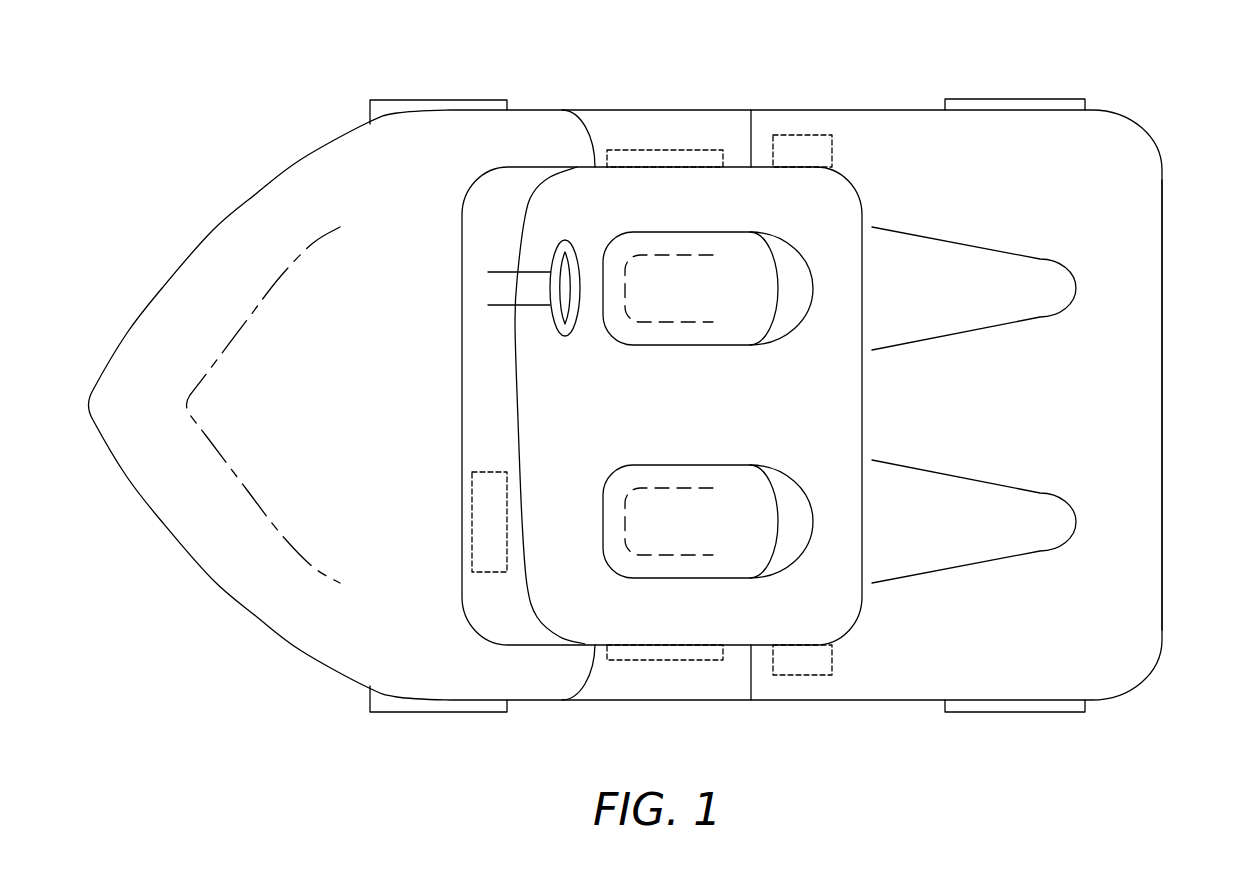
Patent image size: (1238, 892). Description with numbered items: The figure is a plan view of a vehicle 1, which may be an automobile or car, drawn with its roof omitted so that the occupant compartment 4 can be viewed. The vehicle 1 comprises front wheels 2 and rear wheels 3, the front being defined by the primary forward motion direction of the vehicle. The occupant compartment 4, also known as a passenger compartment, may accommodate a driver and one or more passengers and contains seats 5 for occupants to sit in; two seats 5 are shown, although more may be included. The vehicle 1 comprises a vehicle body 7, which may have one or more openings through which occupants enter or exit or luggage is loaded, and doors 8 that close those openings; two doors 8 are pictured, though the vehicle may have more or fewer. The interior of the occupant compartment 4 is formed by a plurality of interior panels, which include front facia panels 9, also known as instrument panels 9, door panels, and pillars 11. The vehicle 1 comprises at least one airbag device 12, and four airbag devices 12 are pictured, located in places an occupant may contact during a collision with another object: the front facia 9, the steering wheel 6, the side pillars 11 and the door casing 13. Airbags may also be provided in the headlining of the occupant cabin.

The vehicle 1 is at (172, 162).
The front wheels 2 is at (437, 97).
The rear wheels 3 is at (1015, 97).
The occupant compartment 4 is at (848, 404).
The seats 5 is at (702, 348).
The steering wheel 6 is at (566, 241).
The vehicle body 7 is at (1163, 403).
The doors 8 is at (613, 123).
The front facia panels 9 is at (483, 616).
The pillars 11 is at (759, 165).
The airbag devices 12 is at (813, 143).
The door casing 13 is at (693, 160).